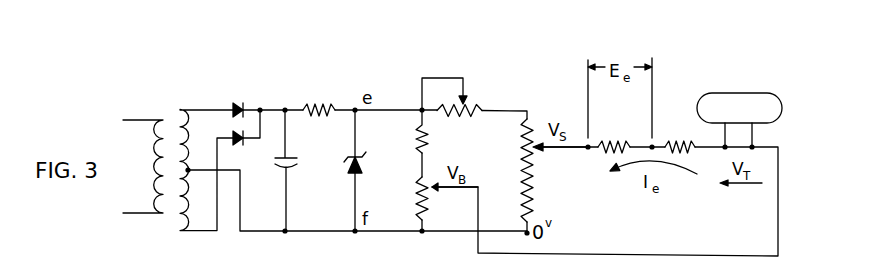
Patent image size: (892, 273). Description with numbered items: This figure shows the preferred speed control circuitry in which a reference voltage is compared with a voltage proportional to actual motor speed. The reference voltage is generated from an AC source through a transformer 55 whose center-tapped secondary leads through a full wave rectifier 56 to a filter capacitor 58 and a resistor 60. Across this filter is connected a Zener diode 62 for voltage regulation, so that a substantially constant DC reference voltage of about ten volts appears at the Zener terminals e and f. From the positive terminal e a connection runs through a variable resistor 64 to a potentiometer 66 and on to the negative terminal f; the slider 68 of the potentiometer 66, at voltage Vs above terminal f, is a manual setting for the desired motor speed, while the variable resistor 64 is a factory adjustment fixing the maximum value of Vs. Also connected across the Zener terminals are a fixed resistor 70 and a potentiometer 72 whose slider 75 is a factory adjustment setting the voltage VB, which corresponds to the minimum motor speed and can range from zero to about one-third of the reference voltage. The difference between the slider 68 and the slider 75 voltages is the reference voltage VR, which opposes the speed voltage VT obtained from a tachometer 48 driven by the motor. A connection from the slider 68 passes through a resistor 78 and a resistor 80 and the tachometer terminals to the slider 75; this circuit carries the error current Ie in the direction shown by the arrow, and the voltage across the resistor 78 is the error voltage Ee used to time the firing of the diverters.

The tachometer 48 is at (737, 93).
The transformer 55 is at (176, 212).
The full wave rectifier 56 is at (243, 123).
The filter capacitor 58 is at (293, 170).
The resistor 60 is at (320, 104).
The Zener diode 62 is at (352, 157).
The variable resistor 64 is at (477, 105).
The potentiometer 66 is at (518, 157).
The slider 68 is at (550, 148).
The fixed resistor 70 is at (427, 145).
The potentiometer 72 is at (417, 197).
The slider 75 is at (450, 188).
The resistor 78 is at (614, 136).
The resistor 80 is at (680, 136).